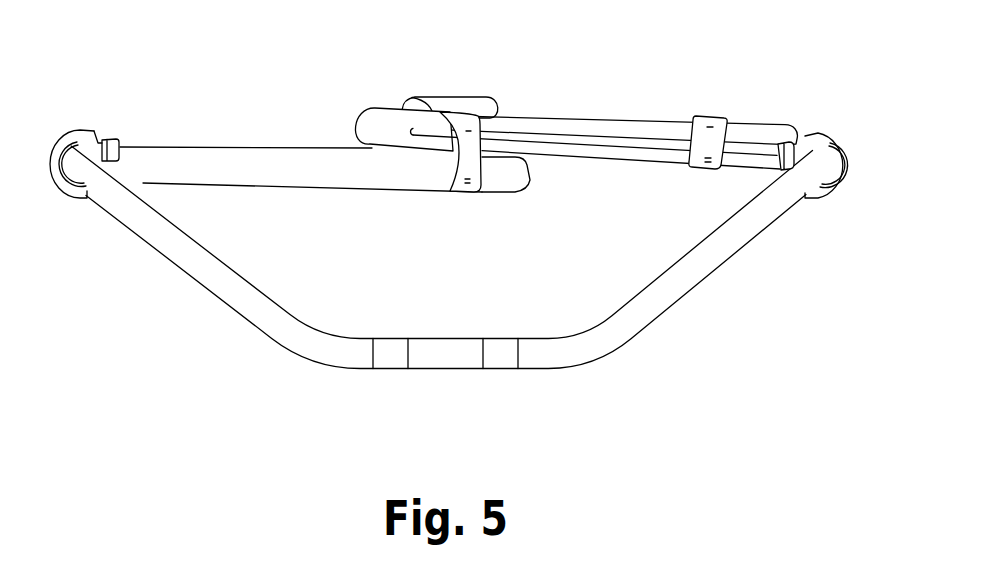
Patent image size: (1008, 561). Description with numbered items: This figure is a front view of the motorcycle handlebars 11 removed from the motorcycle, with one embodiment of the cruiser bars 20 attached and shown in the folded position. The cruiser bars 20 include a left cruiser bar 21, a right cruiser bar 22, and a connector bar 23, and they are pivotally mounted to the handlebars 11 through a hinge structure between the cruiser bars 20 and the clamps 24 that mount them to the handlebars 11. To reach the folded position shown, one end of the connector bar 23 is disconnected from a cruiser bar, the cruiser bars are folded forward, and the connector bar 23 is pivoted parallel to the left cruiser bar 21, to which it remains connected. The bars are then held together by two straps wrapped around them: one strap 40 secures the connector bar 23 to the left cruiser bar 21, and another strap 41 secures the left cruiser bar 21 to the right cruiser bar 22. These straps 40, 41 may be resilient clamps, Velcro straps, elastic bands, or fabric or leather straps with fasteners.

The handlebars 11 is at (687, 278).
The cruiser bars 20 is at (336, 90).
The left cruiser bar 21 is at (592, 125).
The right cruiser bar 22 is at (257, 163).
The connector bar 23 is at (632, 139).
The clamps 24 is at (70, 132).
The strap 40 is at (710, 123).
The strap 41 is at (477, 148).